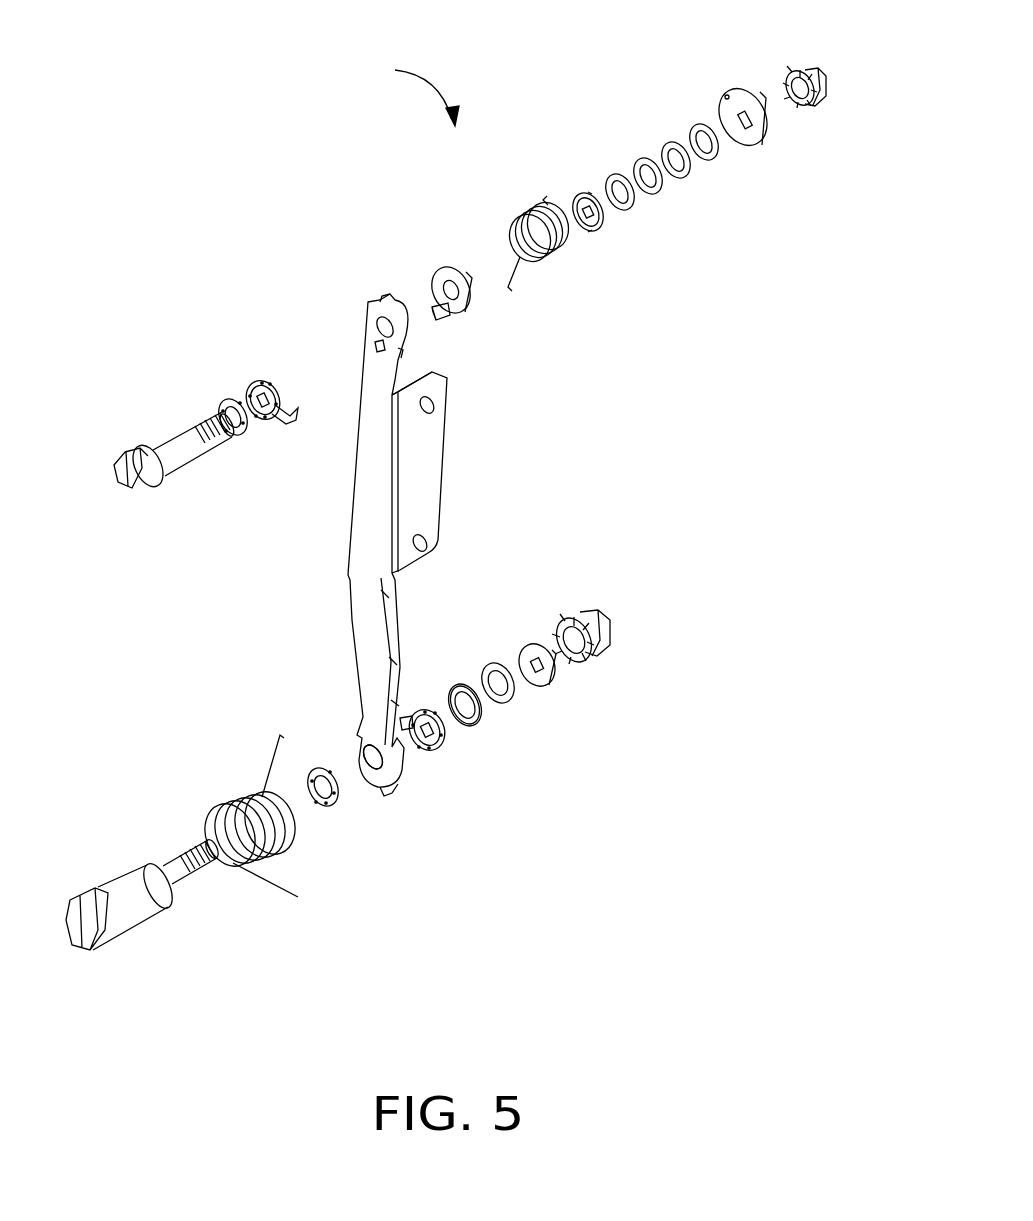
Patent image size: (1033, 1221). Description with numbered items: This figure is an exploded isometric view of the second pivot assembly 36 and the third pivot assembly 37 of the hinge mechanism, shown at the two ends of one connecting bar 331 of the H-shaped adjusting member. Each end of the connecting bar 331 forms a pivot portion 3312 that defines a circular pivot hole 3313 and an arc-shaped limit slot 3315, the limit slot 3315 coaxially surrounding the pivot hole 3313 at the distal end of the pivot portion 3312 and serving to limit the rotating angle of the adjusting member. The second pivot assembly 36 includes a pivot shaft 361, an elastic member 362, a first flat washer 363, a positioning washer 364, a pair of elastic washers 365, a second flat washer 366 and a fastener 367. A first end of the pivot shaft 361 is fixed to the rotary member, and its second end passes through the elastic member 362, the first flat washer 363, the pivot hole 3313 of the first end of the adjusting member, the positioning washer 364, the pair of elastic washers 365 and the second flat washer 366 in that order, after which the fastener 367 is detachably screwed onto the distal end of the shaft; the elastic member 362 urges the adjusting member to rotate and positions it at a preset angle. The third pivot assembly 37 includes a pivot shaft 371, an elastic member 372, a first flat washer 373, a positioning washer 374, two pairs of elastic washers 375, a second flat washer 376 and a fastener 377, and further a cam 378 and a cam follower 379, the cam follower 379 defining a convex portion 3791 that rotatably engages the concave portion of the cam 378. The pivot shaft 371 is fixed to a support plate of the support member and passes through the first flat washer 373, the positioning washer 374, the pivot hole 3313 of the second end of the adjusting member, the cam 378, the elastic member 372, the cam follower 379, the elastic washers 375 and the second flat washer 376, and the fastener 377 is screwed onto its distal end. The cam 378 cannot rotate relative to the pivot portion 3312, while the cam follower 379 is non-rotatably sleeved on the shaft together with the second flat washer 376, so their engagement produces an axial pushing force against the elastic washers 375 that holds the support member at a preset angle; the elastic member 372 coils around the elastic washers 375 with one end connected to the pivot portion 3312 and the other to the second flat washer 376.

The second pivot assembly 36 is at (585, 775).
The third pivot assembly 37 is at (401, 91).
The connecting bar 331 is at (430, 452).
The pivot portion 3312 is at (372, 307).
The pivot hole 3313 is at (362, 752).
The limit slot 3315 is at (363, 772).
The pivot shaft 361 is at (142, 903).
The elastic member 362 is at (233, 857).
The first flat washer 363 is at (333, 810).
The positioning washer 364 is at (433, 750).
The pair of elastic washers 365 is at (528, 703).
The second flat washer 366 is at (547, 675).
The fastener 367 is at (608, 640).
The pivot shaft 371 is at (182, 442).
The elastic member 372 is at (543, 207).
The first flat washer 373 is at (230, 403).
The positioning washer 374 is at (270, 382).
The two pairs of elastic washers 375 is at (688, 118).
The second flat washer 376 is at (733, 103).
The fastener 377 is at (790, 67).
The cam 378 is at (442, 270).
The cam follower 379 is at (588, 200).
The convex portion 3791 is at (588, 232).